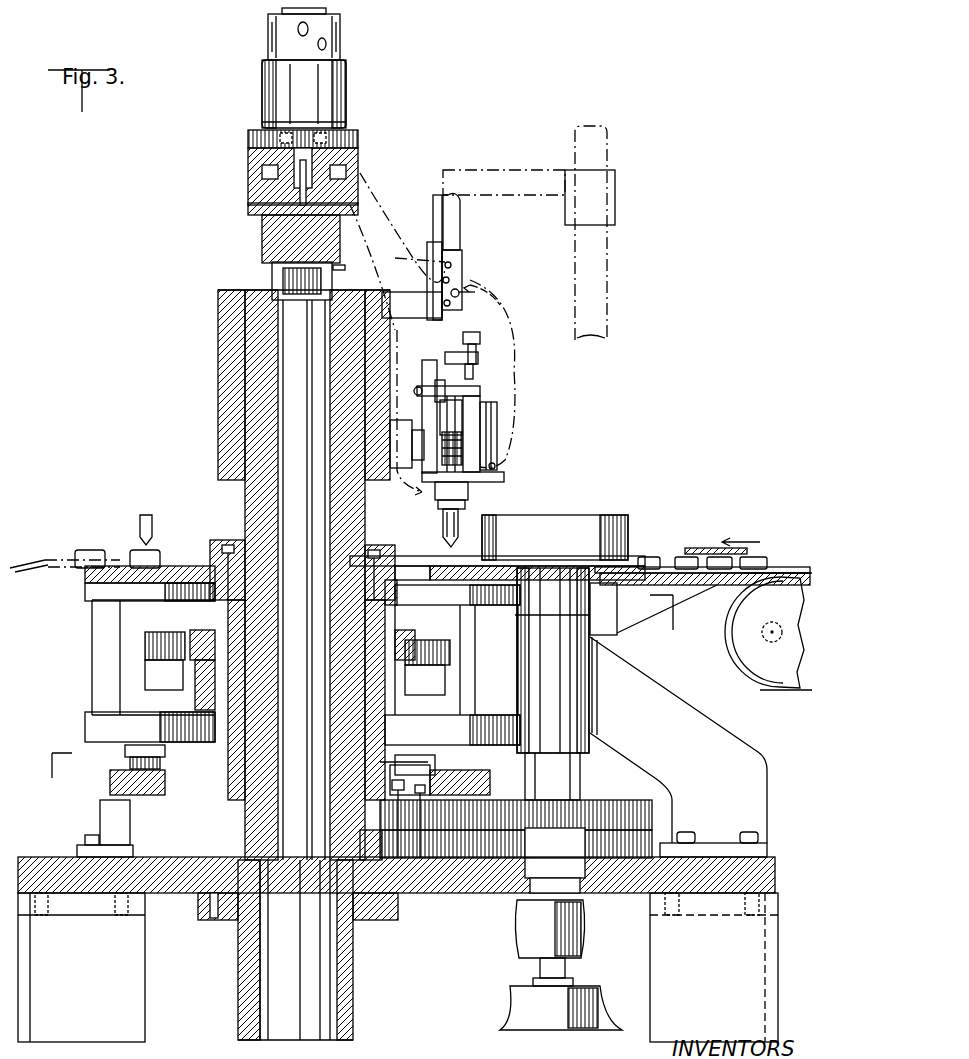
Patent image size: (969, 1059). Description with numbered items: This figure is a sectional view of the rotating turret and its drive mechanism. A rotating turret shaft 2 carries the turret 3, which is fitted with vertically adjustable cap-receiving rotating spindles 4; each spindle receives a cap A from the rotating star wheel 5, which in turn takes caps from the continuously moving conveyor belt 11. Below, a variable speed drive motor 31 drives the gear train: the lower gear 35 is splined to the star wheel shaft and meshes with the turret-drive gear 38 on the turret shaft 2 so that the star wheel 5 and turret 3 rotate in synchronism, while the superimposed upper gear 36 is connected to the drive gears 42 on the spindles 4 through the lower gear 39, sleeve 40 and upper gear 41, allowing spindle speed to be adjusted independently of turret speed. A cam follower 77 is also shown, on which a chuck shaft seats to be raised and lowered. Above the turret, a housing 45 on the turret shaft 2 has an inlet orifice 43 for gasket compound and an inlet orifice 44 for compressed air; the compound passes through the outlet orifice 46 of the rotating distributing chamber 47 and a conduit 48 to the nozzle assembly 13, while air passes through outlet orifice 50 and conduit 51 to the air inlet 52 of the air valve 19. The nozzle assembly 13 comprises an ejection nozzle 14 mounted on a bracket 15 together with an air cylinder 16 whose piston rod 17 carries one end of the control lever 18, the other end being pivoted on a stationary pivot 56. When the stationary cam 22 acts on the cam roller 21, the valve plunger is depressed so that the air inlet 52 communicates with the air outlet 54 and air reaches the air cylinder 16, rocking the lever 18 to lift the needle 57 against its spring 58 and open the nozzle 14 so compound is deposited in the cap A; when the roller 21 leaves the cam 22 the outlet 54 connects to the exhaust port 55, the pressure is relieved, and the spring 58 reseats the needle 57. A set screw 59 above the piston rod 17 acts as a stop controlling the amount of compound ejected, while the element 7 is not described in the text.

The rotating turret shaft 2 is at (245, 405).
The turret 3 is at (184, 566).
The cap-receiving rotating spindle 4 is at (168, 566).
The rotating star wheel 5 is at (630, 556).
The drive cylinder 7 is at (588, 515).
The conveyor belt 11 is at (782, 575).
The nozzle assembly 13 is at (506, 431).
The ejection nozzle 14 is at (445, 527).
The bracket 15 is at (505, 478).
The air cylinder 16 is at (497, 408).
The piston rod 17 is at (462, 402).
The control lever 18 is at (480, 392).
The air valve 19 is at (460, 272).
The cam roller 21 is at (448, 200).
The stationary cam 22 is at (460, 170).
The variable speed drive motor 31 is at (587, 1002).
The lower gear 35 is at (626, 870).
The upper gear 36 is at (625, 792).
The turret-drive gear 38 is at (425, 860).
The lower gear 39 is at (438, 820).
The sleeve 40 is at (385, 730).
The upper gear 41 is at (402, 645).
The drive gear 42 is at (148, 642).
The inlet orifice 43 is at (405, 28).
The inlet orifice 44 is at (405, 44).
The housing 45 is at (332, 92).
The outlet orifice 46 is at (338, 162).
The rotating distributing chamber 47 is at (270, 237).
The conduit 48 is at (400, 368).
The outlet orifice 50 is at (256, 209).
The conduit 51 is at (392, 242).
The air inlet 52 is at (452, 265).
The air outlet 54 is at (445, 276).
The exhaust port 55 is at (480, 301).
The stationary pivot 56 is at (443, 380).
The needle 57 is at (450, 460).
The spring 58 is at (495, 467).
The set screw 59 is at (476, 350).
The cam follower 77 is at (482, 785).
The cap A is at (135, 555).